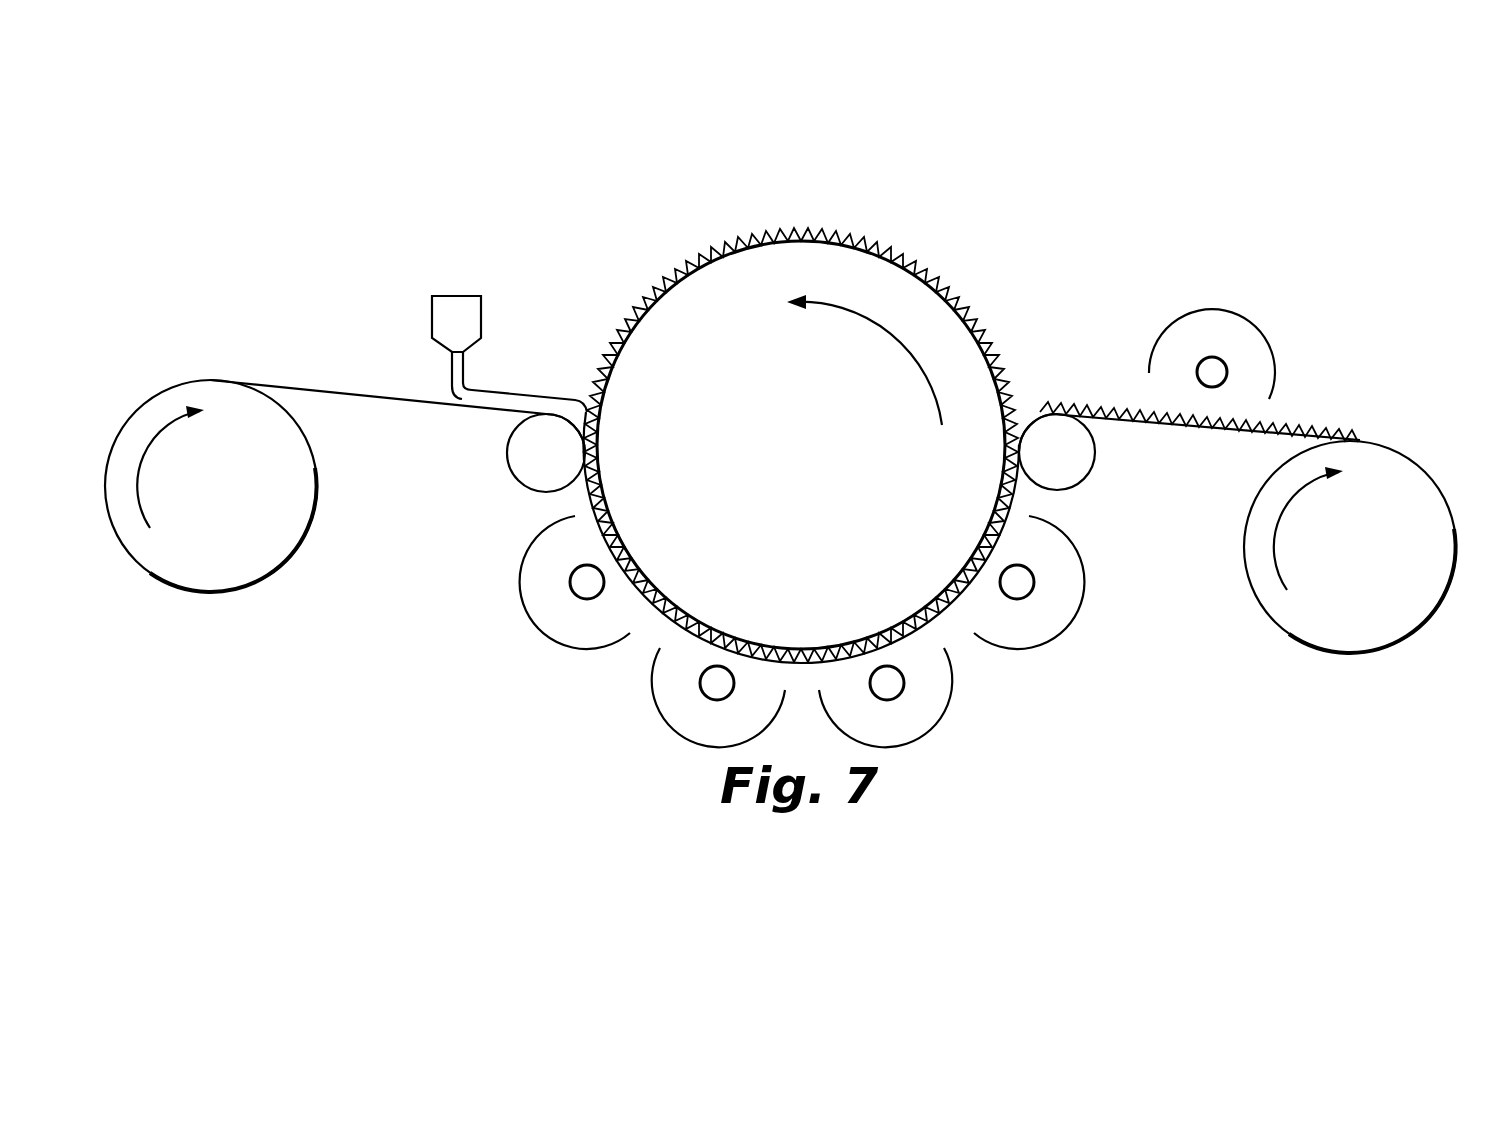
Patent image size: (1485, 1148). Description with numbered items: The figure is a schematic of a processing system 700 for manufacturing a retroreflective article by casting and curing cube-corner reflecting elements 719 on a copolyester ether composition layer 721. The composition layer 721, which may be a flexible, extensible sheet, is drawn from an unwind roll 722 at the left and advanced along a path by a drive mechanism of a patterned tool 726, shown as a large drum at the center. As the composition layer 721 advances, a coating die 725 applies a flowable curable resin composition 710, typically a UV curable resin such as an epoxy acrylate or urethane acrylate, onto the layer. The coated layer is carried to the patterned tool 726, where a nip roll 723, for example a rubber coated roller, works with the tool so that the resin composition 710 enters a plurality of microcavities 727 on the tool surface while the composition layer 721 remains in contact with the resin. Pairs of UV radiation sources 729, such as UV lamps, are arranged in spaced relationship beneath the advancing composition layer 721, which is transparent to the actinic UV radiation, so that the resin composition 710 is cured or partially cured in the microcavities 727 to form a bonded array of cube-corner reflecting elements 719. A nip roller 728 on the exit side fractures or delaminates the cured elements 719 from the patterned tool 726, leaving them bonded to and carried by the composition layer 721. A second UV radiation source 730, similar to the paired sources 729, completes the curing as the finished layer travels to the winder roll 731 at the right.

The processing system 700 is at (1226, 233).
The flowable curable resin composition 710 is at (516, 402).
The cube-corner reflecting elements 719 is at (1087, 401).
The copolyester ether composition layer 721 is at (339, 390).
The unwind roll 722 is at (252, 566).
The nip roll 723 is at (525, 472).
The coating die 725 is at (468, 313).
The patterned tool 726 is at (817, 405).
The microcavities 727 is at (970, 334).
The nip roller 728 is at (1080, 467).
The pairs of UV radiation sources 729 is at (672, 693).
The second UV radiation source 730 is at (1243, 331).
The winder roll 731 is at (1305, 623).